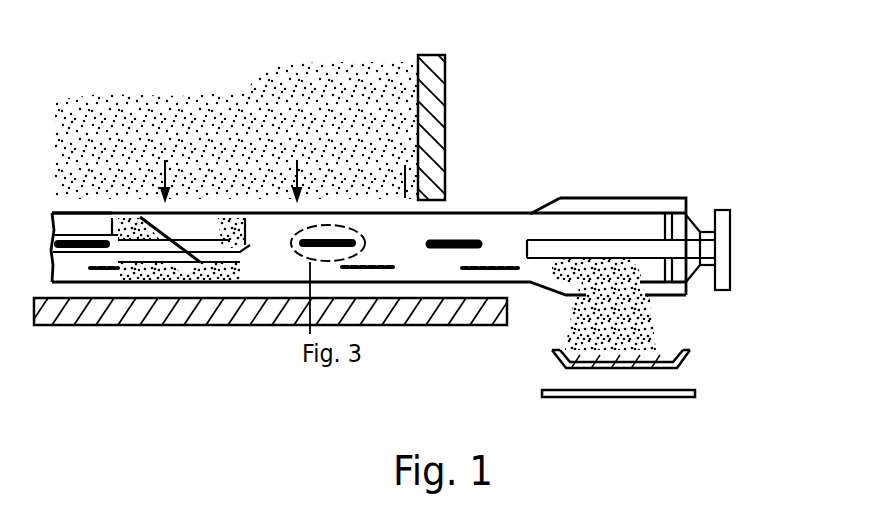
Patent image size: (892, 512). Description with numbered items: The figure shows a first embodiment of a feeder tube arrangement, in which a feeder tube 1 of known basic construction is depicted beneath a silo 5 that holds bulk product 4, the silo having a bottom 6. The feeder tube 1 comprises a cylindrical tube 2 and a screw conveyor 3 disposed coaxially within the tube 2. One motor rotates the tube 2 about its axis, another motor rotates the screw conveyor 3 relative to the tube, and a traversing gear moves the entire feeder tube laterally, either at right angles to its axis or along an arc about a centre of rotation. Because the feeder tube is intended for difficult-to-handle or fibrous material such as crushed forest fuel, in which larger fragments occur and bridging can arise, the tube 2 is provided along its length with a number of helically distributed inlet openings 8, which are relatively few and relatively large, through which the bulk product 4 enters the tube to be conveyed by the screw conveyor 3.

The feeder tube 1 is at (381, 238).
The cylindrical tube 2 is at (513, 228).
The screw conveyor 3 is at (112, 214).
The bulk product 4 is at (375, 95).
The silo 5 is at (445, 100).
The bottom of the silo 6 is at (437, 312).
The inlet openings 8 is at (466, 230).